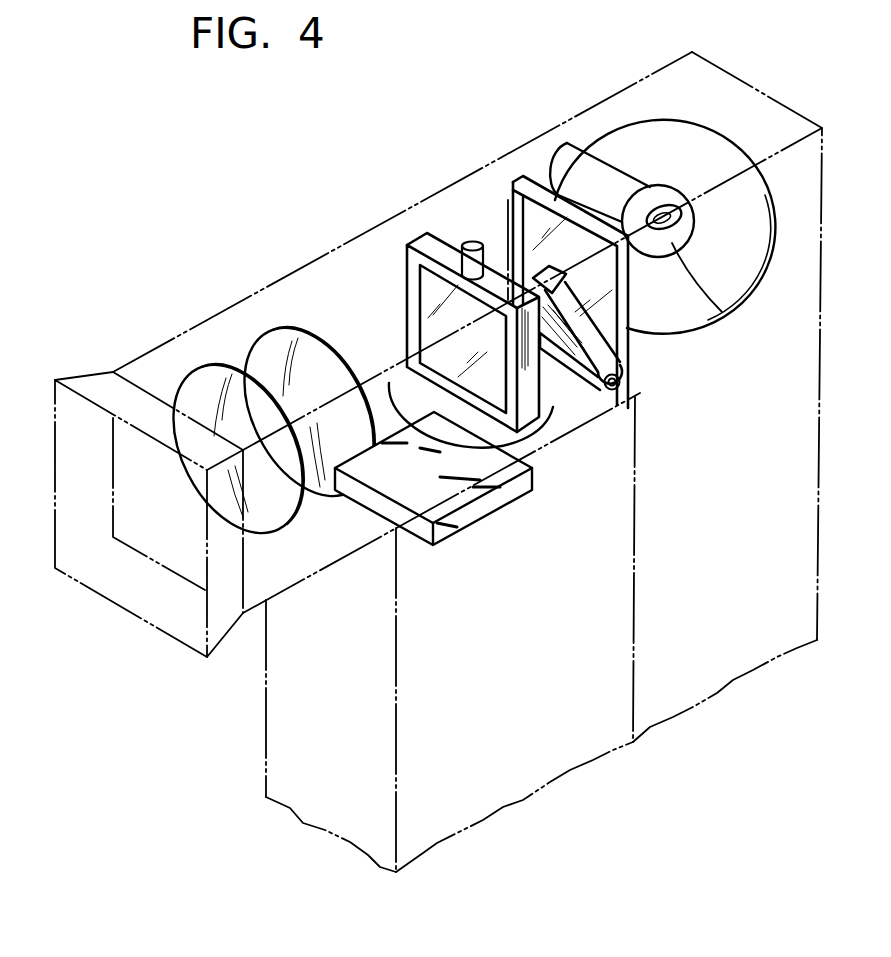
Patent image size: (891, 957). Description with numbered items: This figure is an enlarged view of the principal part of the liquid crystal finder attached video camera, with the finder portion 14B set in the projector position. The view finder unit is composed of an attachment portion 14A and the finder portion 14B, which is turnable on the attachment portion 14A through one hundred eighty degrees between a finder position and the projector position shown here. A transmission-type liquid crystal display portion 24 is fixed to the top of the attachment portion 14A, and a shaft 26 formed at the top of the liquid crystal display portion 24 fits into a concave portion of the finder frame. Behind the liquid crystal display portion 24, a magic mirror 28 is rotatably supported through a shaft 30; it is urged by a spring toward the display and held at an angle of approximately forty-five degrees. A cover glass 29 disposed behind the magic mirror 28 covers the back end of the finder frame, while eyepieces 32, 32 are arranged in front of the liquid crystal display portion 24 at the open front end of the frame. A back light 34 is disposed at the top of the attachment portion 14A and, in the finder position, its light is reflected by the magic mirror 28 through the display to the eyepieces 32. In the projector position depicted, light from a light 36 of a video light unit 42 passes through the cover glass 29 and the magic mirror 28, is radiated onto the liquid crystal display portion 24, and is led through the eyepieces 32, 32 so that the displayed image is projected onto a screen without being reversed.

The attachment portion 14A is at (274, 703).
The finder portion 14B is at (283, 277).
The transmission-type liquid crystal display portion 24 is at (405, 268).
The shaft 26 is at (459, 242).
The magic mirror 28 is at (505, 268).
The cover glass 29 is at (540, 212).
The shaft 30 is at (613, 396).
The eyepieces 32 is at (270, 347).
The back light 34 is at (477, 513).
The light 36 is at (705, 278).
The video light unit 42 is at (628, 100).